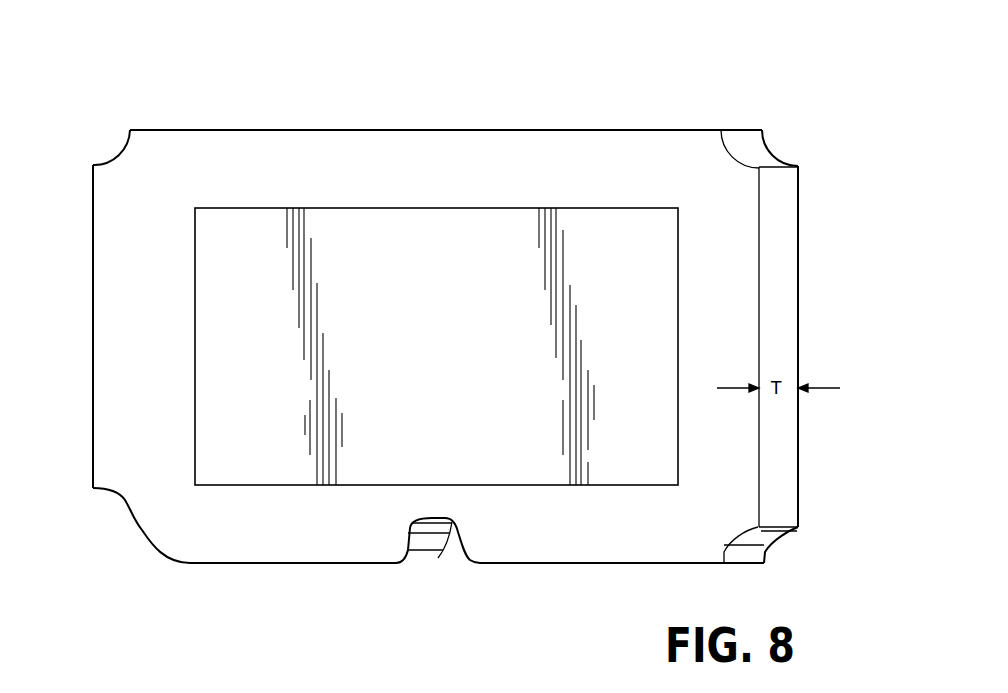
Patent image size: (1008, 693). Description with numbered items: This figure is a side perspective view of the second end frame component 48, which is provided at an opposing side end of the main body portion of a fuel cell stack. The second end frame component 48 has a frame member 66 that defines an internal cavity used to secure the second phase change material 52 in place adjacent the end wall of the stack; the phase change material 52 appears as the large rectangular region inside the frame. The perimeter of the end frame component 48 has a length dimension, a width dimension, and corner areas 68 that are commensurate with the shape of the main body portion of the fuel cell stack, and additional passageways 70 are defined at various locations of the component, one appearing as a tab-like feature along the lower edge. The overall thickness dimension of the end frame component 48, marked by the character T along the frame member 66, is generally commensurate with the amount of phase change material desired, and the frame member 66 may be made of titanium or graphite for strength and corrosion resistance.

The second end frame component 48 is at (822, 152).
The second phase change material 52 is at (653, 277).
The frame member 66 is at (787, 275).
The corner areas 68 is at (128, 150).
The additional passageways 70 is at (423, 547).